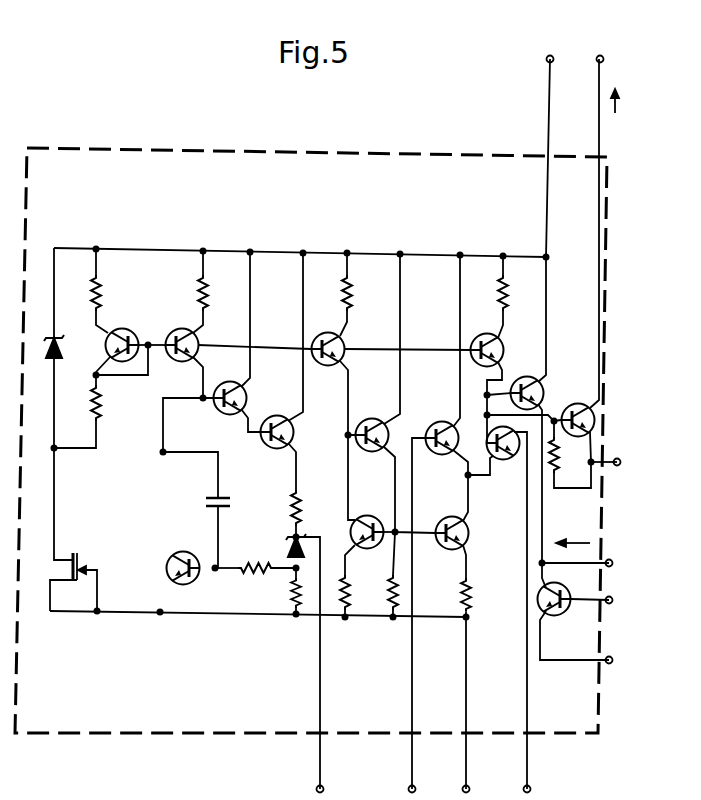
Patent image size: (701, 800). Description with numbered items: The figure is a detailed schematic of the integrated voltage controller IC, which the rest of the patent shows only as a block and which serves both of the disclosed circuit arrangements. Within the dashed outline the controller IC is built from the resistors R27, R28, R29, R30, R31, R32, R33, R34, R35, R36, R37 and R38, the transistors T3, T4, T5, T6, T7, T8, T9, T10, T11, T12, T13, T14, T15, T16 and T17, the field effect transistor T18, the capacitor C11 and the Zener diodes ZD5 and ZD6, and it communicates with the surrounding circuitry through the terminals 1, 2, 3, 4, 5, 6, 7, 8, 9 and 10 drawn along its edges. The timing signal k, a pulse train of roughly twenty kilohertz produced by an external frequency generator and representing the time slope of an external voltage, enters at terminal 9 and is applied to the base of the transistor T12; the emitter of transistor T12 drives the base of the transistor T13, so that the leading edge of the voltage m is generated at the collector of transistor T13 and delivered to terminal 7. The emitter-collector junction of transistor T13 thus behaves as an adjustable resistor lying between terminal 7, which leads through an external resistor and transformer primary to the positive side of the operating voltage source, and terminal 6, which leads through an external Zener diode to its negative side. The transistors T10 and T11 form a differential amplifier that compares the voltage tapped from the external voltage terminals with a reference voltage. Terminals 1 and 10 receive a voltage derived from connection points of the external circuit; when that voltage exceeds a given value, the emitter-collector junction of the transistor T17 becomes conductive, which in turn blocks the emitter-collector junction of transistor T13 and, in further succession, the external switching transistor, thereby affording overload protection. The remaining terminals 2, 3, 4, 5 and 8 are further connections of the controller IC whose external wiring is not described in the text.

The integrated controller IC is at (283, 156).
The transistor T3 is at (127, 334).
The transistor T4 is at (193, 336).
The transistor T5 is at (338, 333).
The transistor T6 is at (499, 350).
The transistor T7 is at (242, 383).
The transistor T8 is at (290, 416).
The transistor T9 is at (381, 419).
The transistor T10 is at (448, 421).
The transistor T11 is at (517, 464).
The transistor T12 is at (541, 386).
The transistor T13 is at (578, 404).
The transistor T14 is at (200, 553).
The transistor T15 is at (384, 518).
The transistor T16 is at (440, 522).
The transistor T17 is at (546, 620).
The field effect transistor T18 is at (78, 569).
The resistor R27 is at (114, 291).
The resistor R28 is at (218, 292).
The resistor R29 is at (363, 282).
The resistor R30 is at (521, 284).
The resistor R31 is at (114, 398).
The resistor R32 is at (315, 508).
The resistor R33 is at (571, 455).
The resistor R34 is at (256, 584).
The resistor R35 is at (292, 600).
The resistor R36 is at (350, 595).
The resistor R37 is at (398, 595).
The resistor R38 is at (484, 598).
The Zener diode ZD5 is at (72, 347).
The Zener diode ZD6 is at (281, 546).
The capacitor C11 is at (235, 503).
The terminal 1 is at (612, 646).
The terminal 2 is at (534, 787).
The terminal 3 is at (419, 787).
The terminal 4 is at (327, 787).
The terminal 5 is at (473, 787).
The terminal 6 is at (617, 448).
The terminal 7 is at (606, 57).
The terminal 8 is at (556, 57).
The terminal 9 is at (608, 548).
The terminal 10 is at (611, 586).
The signal k is at (579, 543).
The voltage m is at (615, 116).